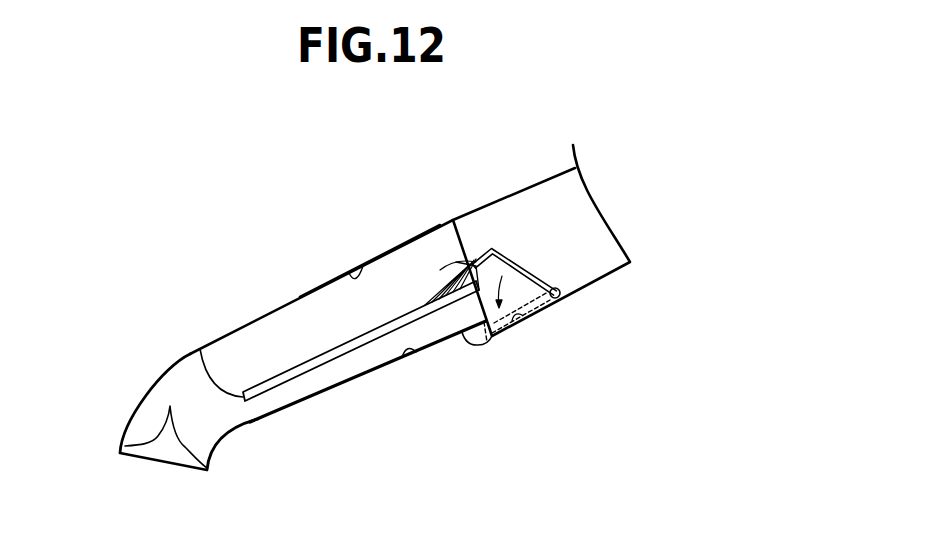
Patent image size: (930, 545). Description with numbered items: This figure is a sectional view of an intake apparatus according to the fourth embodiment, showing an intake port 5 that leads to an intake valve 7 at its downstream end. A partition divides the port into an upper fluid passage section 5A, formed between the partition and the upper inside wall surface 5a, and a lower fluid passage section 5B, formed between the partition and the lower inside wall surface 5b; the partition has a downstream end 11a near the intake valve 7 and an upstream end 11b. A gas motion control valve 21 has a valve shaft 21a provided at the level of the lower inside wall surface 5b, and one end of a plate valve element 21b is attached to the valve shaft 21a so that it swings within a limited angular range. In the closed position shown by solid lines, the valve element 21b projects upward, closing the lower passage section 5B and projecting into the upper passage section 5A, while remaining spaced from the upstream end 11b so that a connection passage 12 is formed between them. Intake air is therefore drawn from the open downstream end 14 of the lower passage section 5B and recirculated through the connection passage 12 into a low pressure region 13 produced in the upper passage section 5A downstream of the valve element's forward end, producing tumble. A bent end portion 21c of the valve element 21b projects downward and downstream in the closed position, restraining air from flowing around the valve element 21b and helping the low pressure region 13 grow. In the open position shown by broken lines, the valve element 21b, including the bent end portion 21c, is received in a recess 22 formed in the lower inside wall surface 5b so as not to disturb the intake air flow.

The intake port 5 is at (265, 316).
The upper fluid passage section 5A is at (310, 305).
The lower fluid passage section 5B is at (364, 364).
The upper inside wall surface 5a is at (344, 274).
The lower inside wall surface 5b is at (410, 358).
The intake valve 7 is at (177, 452).
The downstream end of partition 11a is at (200, 347).
The upstream end of partition 11b is at (452, 268).
The connection passage 12 is at (466, 266).
The low pressure region 13 is at (446, 281).
The open downstream end of second passage section 14 is at (248, 414).
The gas motion control valve 21 is at (541, 262).
The valve shaft 21a is at (562, 297).
The valve element 21b is at (516, 262).
The bent end portion 21c is at (474, 262).
The recess 22 is at (523, 320).